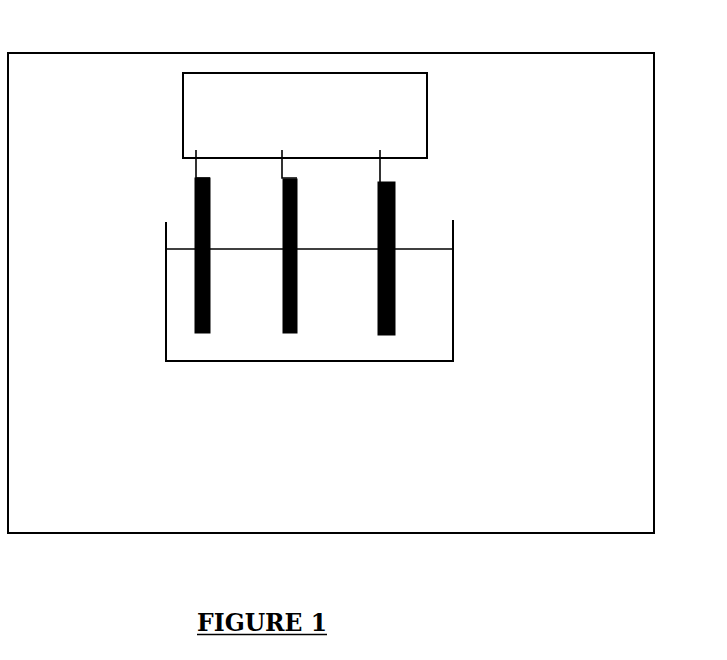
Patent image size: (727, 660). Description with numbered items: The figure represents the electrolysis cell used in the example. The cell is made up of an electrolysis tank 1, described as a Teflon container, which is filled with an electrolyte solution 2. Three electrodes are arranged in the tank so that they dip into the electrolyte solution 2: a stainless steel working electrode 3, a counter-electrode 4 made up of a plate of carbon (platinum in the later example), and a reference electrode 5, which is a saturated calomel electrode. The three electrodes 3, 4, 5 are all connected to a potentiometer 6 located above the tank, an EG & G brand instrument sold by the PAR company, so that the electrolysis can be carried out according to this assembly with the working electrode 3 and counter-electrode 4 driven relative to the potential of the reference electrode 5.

The electrolysis tank 1 is at (166, 306).
The electrolyte solution 2 is at (181, 320).
The working electrode 3 is at (432, 324).
The counter-electrode 4 is at (195, 207).
The reference electrode 5 is at (308, 323).
The potentiometer 6 is at (402, 116).